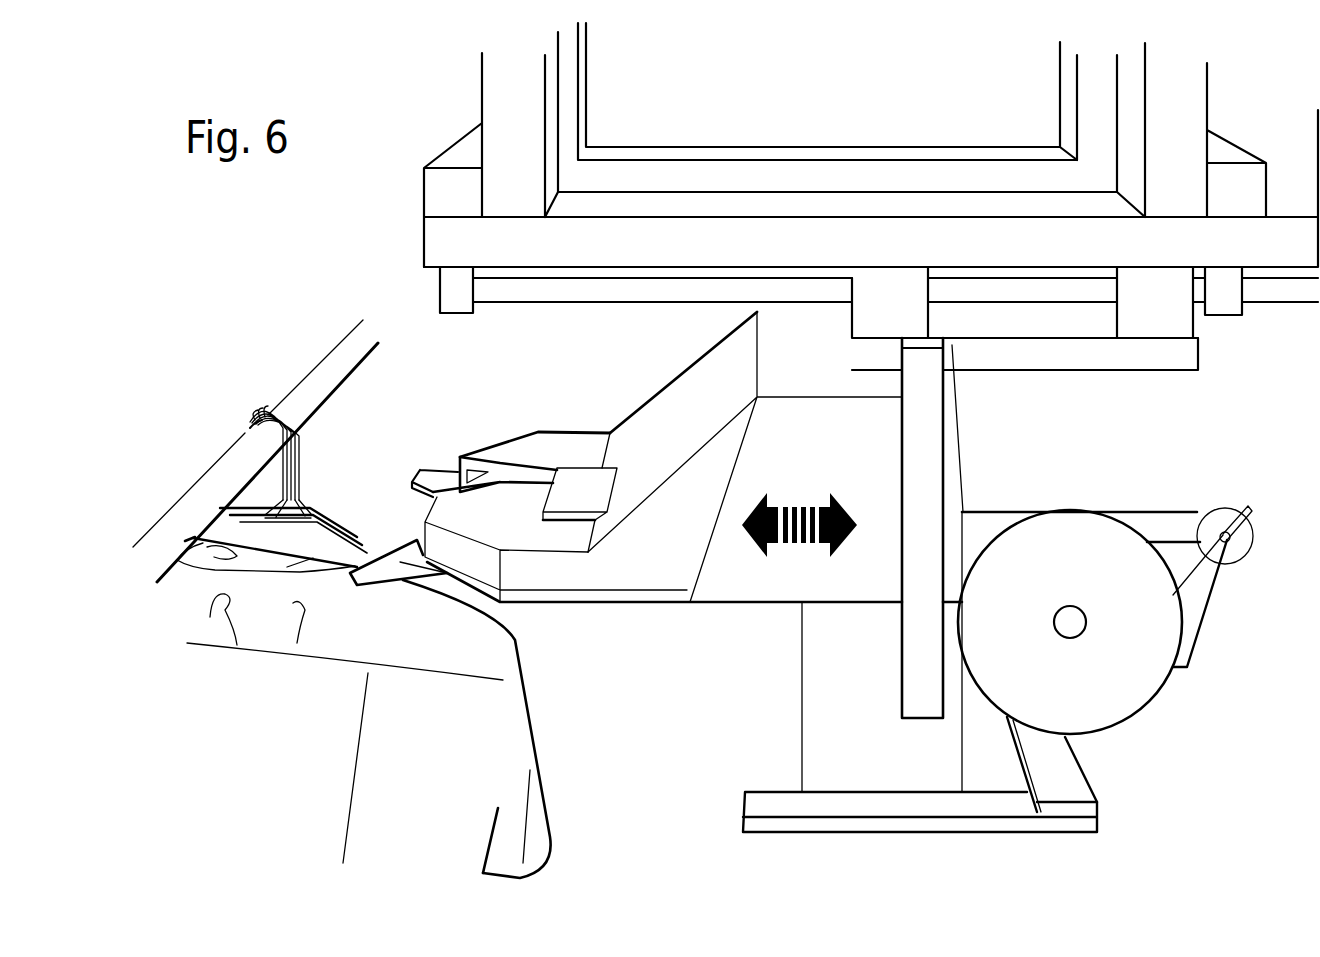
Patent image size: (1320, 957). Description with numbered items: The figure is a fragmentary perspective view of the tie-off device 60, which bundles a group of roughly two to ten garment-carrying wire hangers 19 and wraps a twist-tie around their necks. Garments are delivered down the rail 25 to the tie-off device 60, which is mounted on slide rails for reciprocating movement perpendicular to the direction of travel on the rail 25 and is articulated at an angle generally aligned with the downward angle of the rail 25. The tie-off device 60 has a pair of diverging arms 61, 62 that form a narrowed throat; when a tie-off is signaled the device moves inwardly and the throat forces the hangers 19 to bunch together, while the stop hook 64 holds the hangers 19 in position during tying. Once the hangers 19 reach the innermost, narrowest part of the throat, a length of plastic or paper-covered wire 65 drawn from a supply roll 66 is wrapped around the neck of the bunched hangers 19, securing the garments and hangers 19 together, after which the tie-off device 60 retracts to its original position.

The wire hanger 19 is at (282, 467).
The rail 25 is at (343, 353).
The tie-off device 60 is at (686, 400).
The diverging arm 61 is at (437, 480).
The diverging arm 62 is at (447, 574).
The stop hook 64 is at (255, 417).
The plastic or paper-covered wire 65 is at (997, 512).
The supply roll 66 is at (1080, 702).